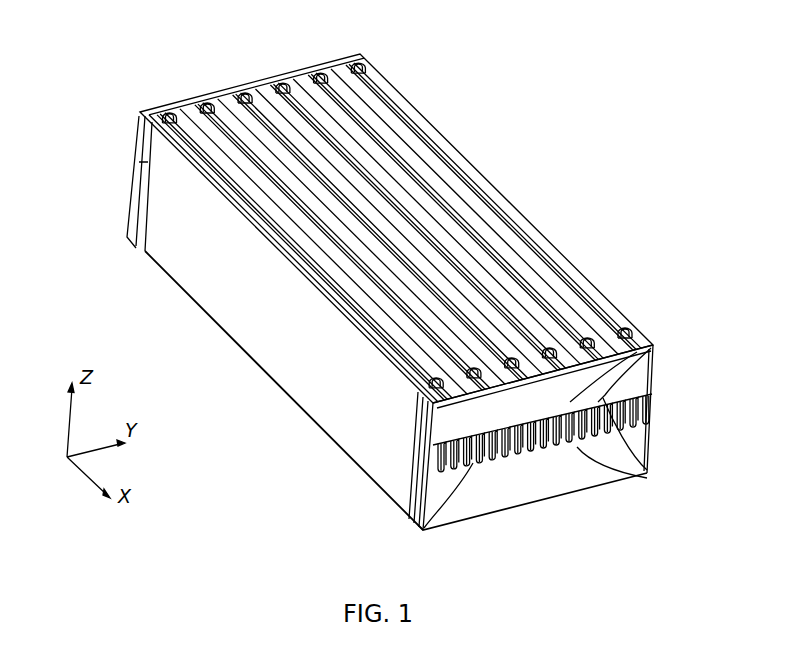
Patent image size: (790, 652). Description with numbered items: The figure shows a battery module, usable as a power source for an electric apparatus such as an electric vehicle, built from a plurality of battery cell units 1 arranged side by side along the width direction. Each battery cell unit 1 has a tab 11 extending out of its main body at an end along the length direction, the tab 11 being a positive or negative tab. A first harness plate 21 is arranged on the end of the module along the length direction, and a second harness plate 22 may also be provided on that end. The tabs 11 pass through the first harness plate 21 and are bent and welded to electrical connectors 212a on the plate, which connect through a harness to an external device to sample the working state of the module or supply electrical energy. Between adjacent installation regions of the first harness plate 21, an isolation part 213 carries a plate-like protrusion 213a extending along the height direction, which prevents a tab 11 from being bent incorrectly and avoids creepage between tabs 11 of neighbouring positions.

The battery cell unit 1 is at (543, 243).
The tab 11 is at (420, 528).
The first harness plate 21 is at (133, 213).
The second harness plate 22 is at (137, 137).
The electrical connector 212a is at (654, 345).
The isolation part 213 is at (545, 447).
The protrusion 213a is at (618, 442).